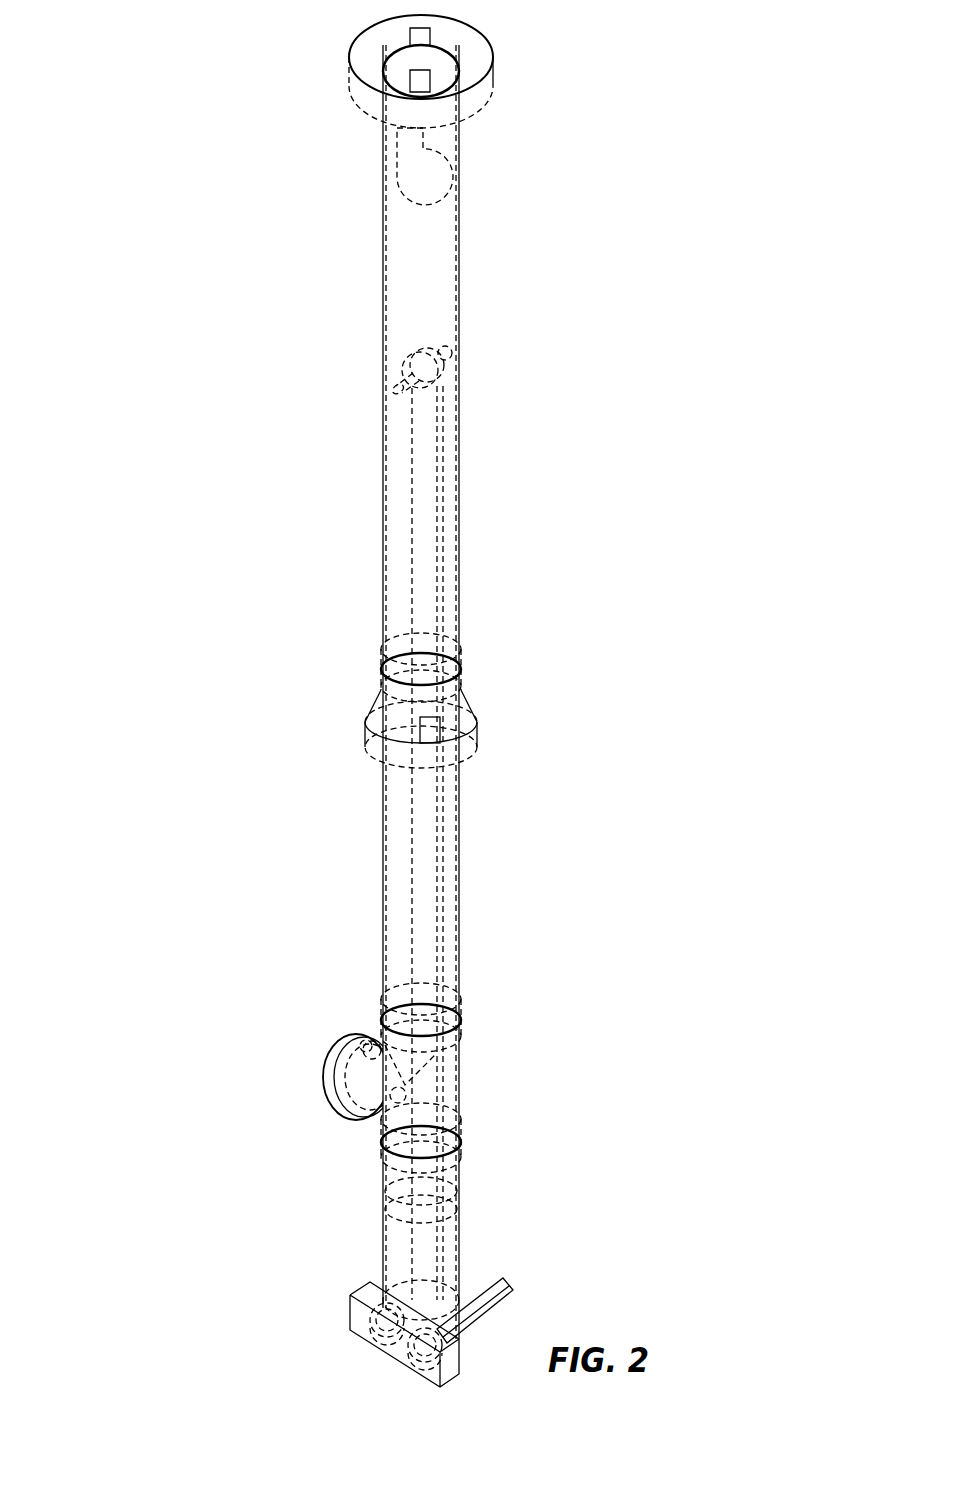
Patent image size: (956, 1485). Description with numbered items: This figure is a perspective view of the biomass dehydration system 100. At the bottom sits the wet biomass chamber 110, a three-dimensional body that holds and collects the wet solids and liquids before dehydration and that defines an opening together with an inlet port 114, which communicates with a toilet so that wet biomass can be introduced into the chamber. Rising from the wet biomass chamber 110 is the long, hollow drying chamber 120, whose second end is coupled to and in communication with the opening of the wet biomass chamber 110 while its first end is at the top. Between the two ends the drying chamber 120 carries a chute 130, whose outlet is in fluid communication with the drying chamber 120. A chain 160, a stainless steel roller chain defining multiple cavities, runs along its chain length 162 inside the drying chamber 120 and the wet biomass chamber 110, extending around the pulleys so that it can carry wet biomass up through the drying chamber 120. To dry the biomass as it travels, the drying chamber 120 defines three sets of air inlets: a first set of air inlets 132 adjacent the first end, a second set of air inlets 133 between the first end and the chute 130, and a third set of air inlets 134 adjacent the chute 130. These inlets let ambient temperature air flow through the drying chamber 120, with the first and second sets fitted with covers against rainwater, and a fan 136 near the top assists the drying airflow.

The biomass dehydration system 100 is at (208, 82).
The wet biomass chamber 110 is at (360, 1338).
The inlet port 114 is at (510, 1285).
The drying chamber 120 is at (460, 888).
The chute 130 is at (303, 1032).
The first set of air inlets 132 is at (446, 65).
The second set of air inlets 133 is at (465, 711).
The third set of air inlets 134 is at (471, 1200).
The fan 136 is at (430, 178).
The chain 160 is at (443, 492).
The chain length 162 is at (443, 577).